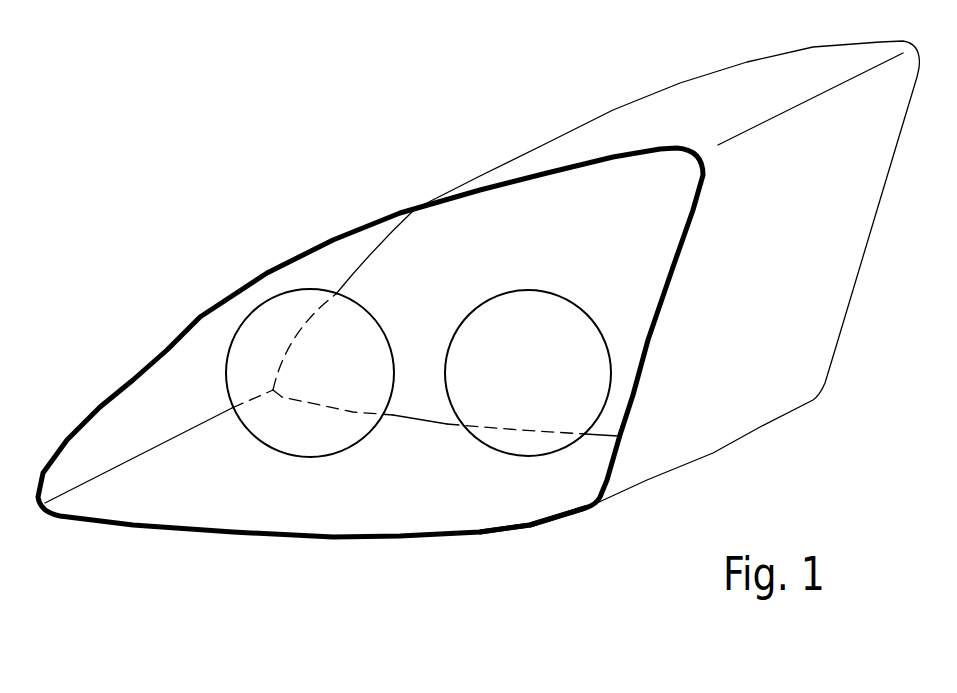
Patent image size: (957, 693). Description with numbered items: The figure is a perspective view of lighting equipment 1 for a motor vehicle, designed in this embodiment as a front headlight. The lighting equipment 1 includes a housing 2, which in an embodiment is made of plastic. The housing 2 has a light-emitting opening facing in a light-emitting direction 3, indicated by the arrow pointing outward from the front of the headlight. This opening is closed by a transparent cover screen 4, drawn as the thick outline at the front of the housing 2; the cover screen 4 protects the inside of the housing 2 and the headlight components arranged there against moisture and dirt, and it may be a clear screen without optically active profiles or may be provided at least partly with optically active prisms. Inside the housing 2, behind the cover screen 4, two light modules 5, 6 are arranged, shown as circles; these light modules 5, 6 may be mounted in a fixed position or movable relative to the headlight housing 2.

The lighting equipment 1 is at (238, 223).
The housing 2 is at (628, 125).
The light-emitting direction 3 is at (355, 502).
The cover screen 4 is at (520, 513).
The light module 5 is at (312, 384).
The light module 6 is at (515, 382).